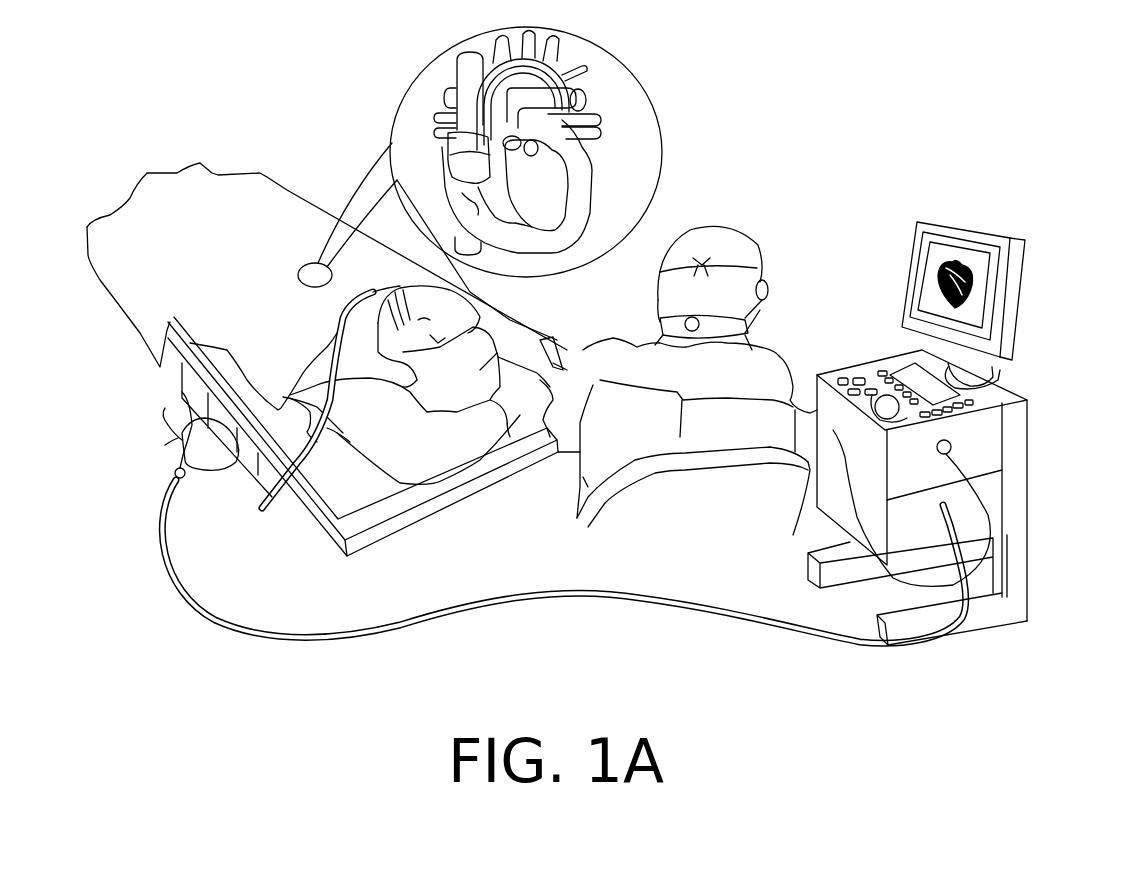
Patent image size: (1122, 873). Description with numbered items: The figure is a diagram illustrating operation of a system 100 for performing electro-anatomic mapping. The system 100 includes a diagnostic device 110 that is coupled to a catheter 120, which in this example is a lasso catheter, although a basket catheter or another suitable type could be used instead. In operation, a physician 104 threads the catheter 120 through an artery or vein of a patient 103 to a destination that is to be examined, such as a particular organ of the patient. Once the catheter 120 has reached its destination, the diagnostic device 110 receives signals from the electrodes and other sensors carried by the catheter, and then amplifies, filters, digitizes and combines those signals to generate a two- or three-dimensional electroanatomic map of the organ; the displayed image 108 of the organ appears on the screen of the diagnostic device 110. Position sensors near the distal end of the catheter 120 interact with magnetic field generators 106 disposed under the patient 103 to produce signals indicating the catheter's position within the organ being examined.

The system 100 is at (856, 159).
The patient 103 is at (443, 400).
The physician 104 is at (663, 277).
The magnetic field generators 106 is at (182, 392).
The ultrasound image 108 is at (933, 282).
The diagnostic device 110 is at (935, 280).
The catheter 120 is at (997, 522).